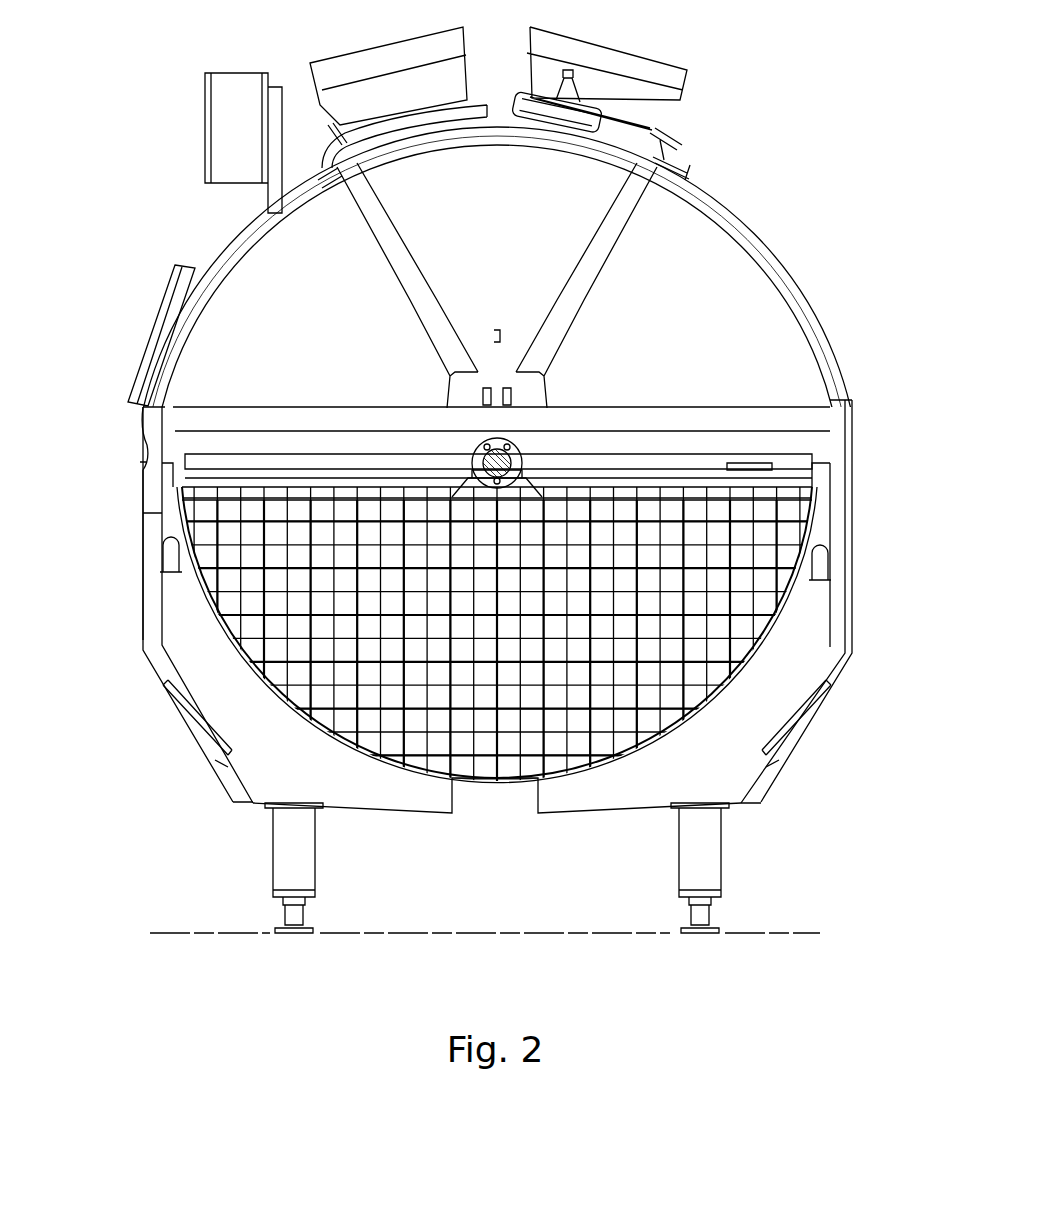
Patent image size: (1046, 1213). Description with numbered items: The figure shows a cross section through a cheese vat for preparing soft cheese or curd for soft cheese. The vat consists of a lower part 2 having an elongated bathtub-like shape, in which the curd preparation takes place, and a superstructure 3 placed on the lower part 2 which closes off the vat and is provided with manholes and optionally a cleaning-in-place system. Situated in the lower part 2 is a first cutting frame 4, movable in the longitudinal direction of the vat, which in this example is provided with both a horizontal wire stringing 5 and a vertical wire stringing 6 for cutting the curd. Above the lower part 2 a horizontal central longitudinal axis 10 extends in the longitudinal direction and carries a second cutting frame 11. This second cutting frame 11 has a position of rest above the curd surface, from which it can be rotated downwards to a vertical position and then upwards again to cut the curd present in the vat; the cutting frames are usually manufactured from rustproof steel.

The lower part 2 is at (762, 695).
The superstructure 3 is at (783, 243).
The first cutting frame 4 is at (628, 755).
The horizontal wire stringing 5 is at (716, 596).
The vertical wire stringing 6 is at (752, 607).
The horizontal central longitudinal axis 10 is at (500, 463).
The second cutting frame 11 is at (222, 460).